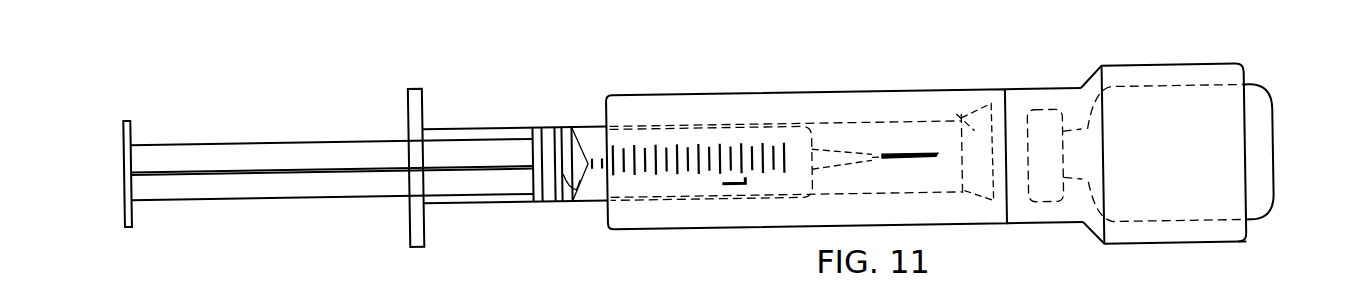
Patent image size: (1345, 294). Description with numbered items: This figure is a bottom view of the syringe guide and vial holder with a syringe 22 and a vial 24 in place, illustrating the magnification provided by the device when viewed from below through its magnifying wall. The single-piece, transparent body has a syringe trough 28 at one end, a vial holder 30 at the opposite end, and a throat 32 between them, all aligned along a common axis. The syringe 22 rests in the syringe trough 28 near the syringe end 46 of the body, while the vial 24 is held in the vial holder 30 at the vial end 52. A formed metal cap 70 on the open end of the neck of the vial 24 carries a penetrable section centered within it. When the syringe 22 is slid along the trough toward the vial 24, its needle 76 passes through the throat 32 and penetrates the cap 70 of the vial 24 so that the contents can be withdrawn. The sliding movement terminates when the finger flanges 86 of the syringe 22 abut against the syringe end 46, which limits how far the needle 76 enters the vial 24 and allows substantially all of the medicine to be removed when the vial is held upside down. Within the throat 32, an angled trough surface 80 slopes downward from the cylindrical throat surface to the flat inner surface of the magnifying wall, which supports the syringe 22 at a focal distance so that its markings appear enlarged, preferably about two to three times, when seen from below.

The syringe 22 is at (304, 130).
The finger flanges 86 is at (415, 88).
The syringe end 46 is at (607, 210).
The syringe trough 28 is at (707, 84).
The needle 76 is at (905, 157).
The angled trough surface 80 is at (963, 122).
The throat 32 is at (1043, 86).
The vial holder 30 is at (1187, 74).
The vial 24 is at (1268, 86).
The vial end 52 is at (1247, 227).
The cap 70 is at (1018, 289).